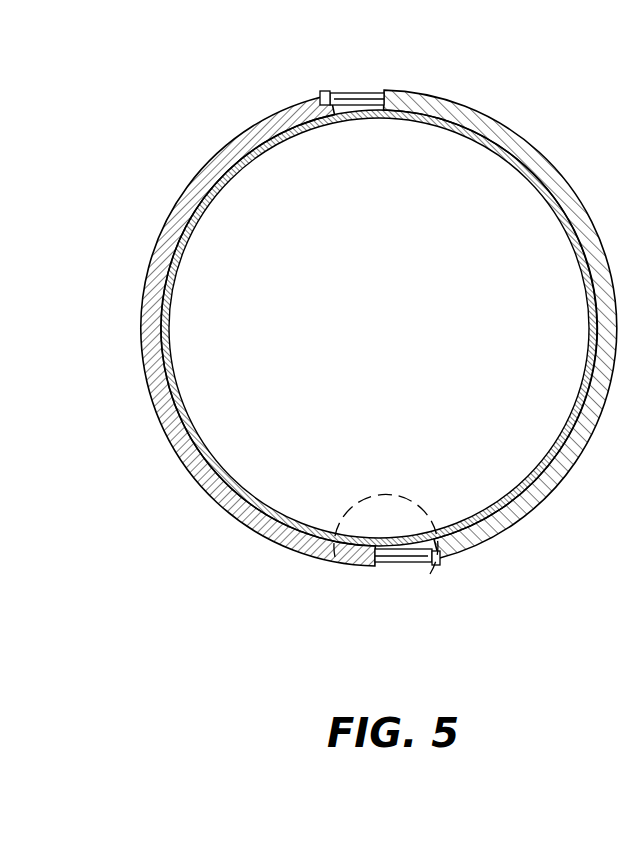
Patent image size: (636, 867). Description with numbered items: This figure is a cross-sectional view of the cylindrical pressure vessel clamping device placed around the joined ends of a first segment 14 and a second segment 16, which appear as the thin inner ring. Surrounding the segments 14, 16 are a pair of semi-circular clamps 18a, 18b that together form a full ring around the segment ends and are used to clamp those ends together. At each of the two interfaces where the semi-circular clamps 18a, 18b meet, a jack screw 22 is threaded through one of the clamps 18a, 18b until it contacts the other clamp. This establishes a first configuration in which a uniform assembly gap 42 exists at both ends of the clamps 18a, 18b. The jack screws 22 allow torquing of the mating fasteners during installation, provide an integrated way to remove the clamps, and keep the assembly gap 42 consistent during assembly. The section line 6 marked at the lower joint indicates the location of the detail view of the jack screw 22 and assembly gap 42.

The semi-circular clamp 18a is at (224, 141).
The semi-circular clamp 18b is at (548, 153).
The first segment 14 is at (379, 328).
The second segment 16 is at (435, 126).
The jack screw 22 is at (337, 92).
The assembly gap 42 is at (381, 80).
The section line 6- 6 is at (350, 590).